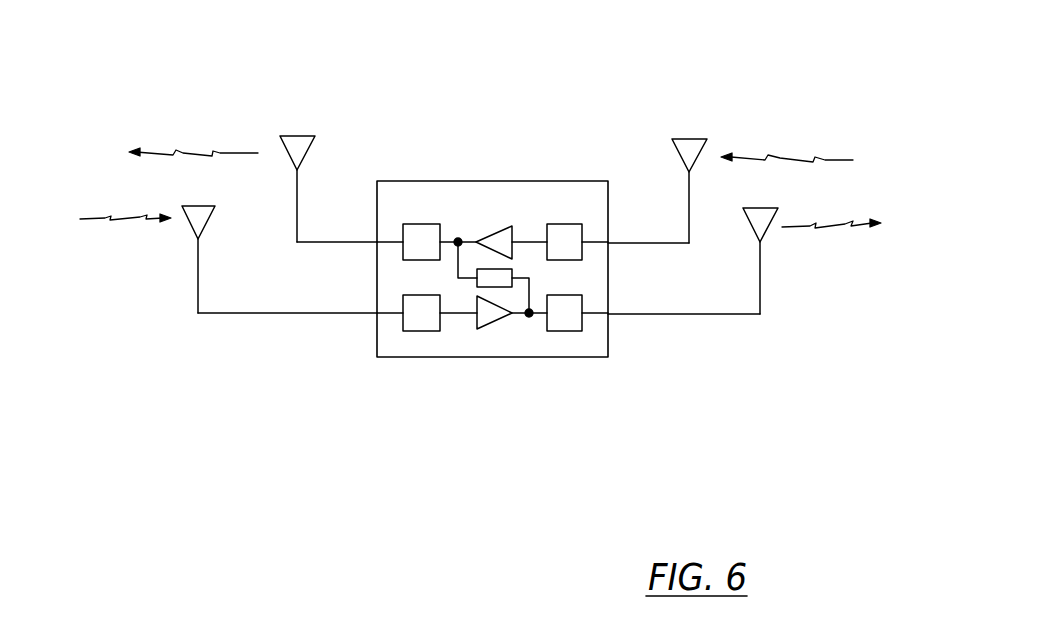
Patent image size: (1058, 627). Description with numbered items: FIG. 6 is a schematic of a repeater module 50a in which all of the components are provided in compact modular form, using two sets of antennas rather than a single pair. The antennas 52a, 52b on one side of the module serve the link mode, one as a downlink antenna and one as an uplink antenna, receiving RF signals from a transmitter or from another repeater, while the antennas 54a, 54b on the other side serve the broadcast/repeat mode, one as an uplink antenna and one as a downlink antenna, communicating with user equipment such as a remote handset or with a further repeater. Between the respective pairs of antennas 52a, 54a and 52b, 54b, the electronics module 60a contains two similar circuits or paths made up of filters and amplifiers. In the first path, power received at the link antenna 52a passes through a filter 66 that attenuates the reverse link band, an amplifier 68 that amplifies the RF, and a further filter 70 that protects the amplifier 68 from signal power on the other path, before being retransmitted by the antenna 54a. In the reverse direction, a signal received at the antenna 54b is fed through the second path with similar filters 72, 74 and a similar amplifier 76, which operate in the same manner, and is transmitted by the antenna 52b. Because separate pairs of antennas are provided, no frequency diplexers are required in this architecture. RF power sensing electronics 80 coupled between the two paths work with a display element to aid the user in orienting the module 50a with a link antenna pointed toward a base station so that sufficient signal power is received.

The repeater module 50a is at (602, 176).
The transceiver circuit 60a is at (410, 196).
The antenna 52a is at (702, 138).
The antenna 52b is at (778, 216).
The antenna 54a is at (283, 144).
The antenna 54b is at (203, 232).
The filter 66 is at (608, 236).
The amplifier 68 is at (505, 225).
The filter 70 is at (377, 236).
The filter 72 is at (420, 331).
The filter 74 is at (568, 331).
The amplifier 76 is at (485, 329).
The RF power sensing electronics 80 is at (477, 281).